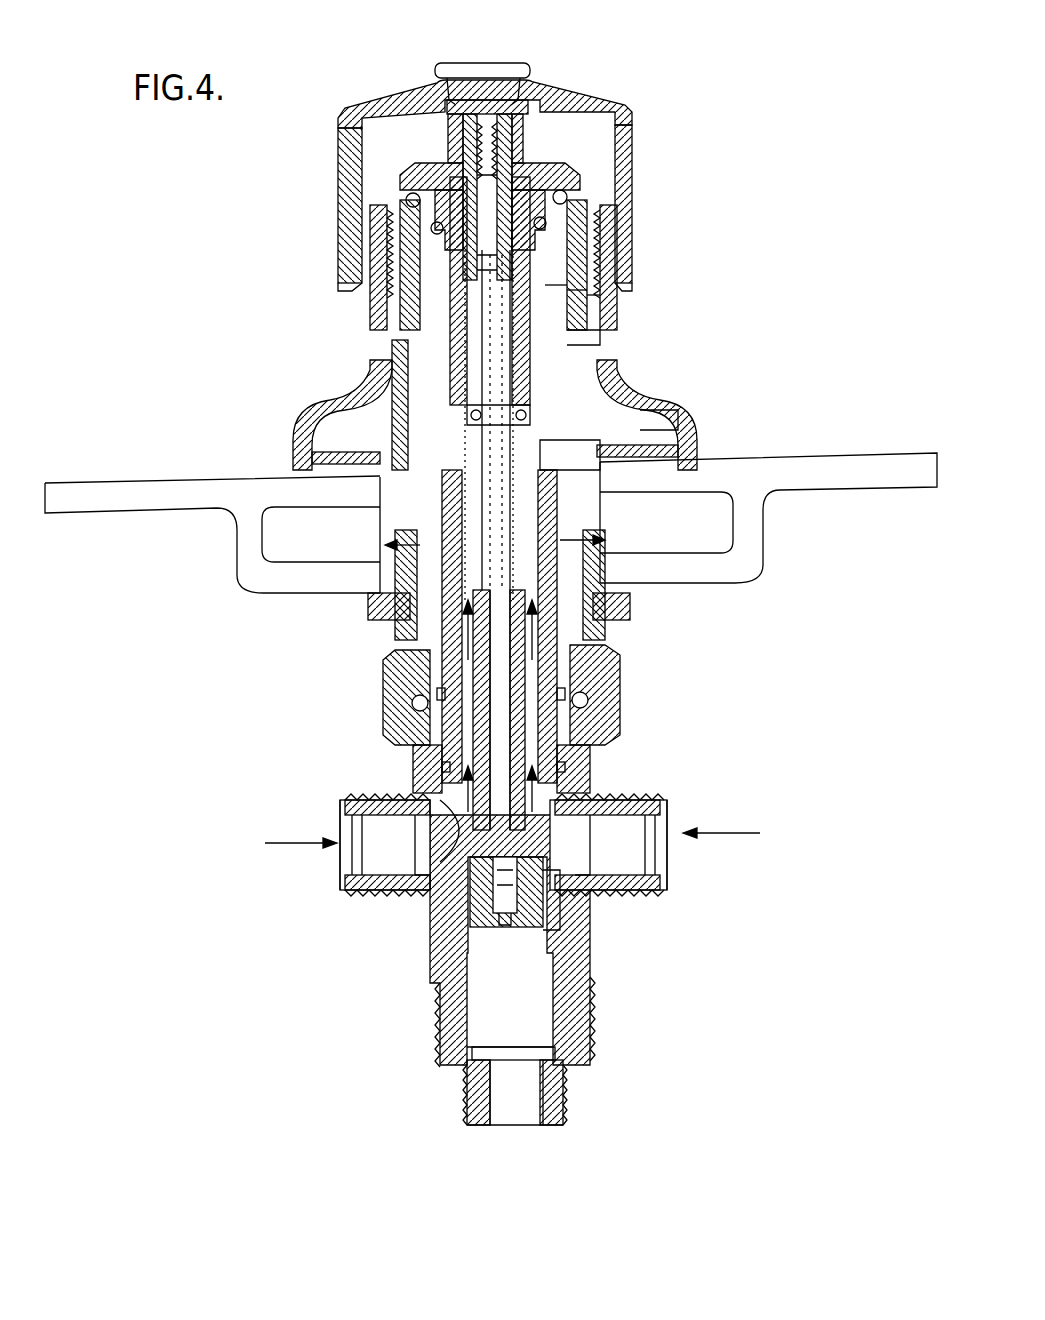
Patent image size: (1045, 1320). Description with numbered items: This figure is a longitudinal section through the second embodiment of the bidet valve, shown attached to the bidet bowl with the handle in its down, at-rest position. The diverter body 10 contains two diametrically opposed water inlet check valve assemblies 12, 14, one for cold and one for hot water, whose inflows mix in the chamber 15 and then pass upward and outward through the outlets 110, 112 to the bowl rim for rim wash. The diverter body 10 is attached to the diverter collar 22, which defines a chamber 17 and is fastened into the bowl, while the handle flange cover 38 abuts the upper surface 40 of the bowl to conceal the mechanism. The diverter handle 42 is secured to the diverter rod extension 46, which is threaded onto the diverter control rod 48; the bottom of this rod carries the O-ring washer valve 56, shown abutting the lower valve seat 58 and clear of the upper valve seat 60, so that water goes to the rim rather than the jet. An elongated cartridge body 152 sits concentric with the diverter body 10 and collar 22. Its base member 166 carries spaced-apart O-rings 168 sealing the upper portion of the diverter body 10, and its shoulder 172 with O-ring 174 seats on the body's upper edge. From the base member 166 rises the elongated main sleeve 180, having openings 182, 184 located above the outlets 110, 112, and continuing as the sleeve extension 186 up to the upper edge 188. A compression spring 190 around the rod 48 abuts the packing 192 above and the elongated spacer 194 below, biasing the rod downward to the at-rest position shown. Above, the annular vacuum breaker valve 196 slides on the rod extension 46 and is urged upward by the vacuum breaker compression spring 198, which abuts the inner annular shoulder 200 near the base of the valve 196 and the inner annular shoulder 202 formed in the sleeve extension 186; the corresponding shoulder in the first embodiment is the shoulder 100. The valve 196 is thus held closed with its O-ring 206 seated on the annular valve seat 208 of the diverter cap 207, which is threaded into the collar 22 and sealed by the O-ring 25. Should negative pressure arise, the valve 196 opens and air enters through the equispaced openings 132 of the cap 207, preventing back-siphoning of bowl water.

The diverter body 10 is at (590, 965).
The water inlet check valve assembly 12 is at (668, 822).
The water inlet check valve assembly 14 is at (340, 855).
The chamber 15 is at (525, 580).
The chamber 17 is at (685, 410).
The diverter collar 22 is at (570, 290).
The O-ring 25 is at (393, 207).
The handle flange cover 38 is at (650, 398).
The upper surface of the bowl 40 is at (895, 453).
The diverter handle 42 is at (570, 105).
The diverter rod extension 46 is at (520, 150).
The diverter control rod 48 is at (487, 352).
The O-ring washer valve 56 is at (580, 900).
The lower valve seat 58 is at (450, 880).
The upper valve seat 60 is at (580, 800).
The inner annular shoulder 100 is at (395, 245).
The outlet 110 is at (600, 515).
The outlet 112 is at (420, 530).
The equispaced openings 132 is at (433, 168).
The cartridge body 152 is at (430, 635).
The base member 166 is at (453, 745).
The O-rings 168 is at (440, 758).
The shoulder 172 is at (410, 675).
The O-ring 174 is at (420, 680).
The main sleeve 180 is at (580, 585).
The opening 182 is at (570, 465).
The opening 184 is at (293, 462).
The sleeve extension 186 is at (460, 375).
The upper edge 188 is at (585, 292).
The compression spring 190 is at (470, 565).
The packing 192 is at (575, 433).
The elongated spacer 194 is at (560, 718).
The vacuum breaker valve 196 is at (590, 262).
The vacuum breaker compression spring 198 is at (580, 338).
The inner annular shoulder 200 is at (600, 300).
The inner annular shoulder 202 is at (395, 383).
The O-ring 206 is at (588, 222).
The diverter cap 207 is at (395, 185).
The annular valve seat 208 is at (598, 172).